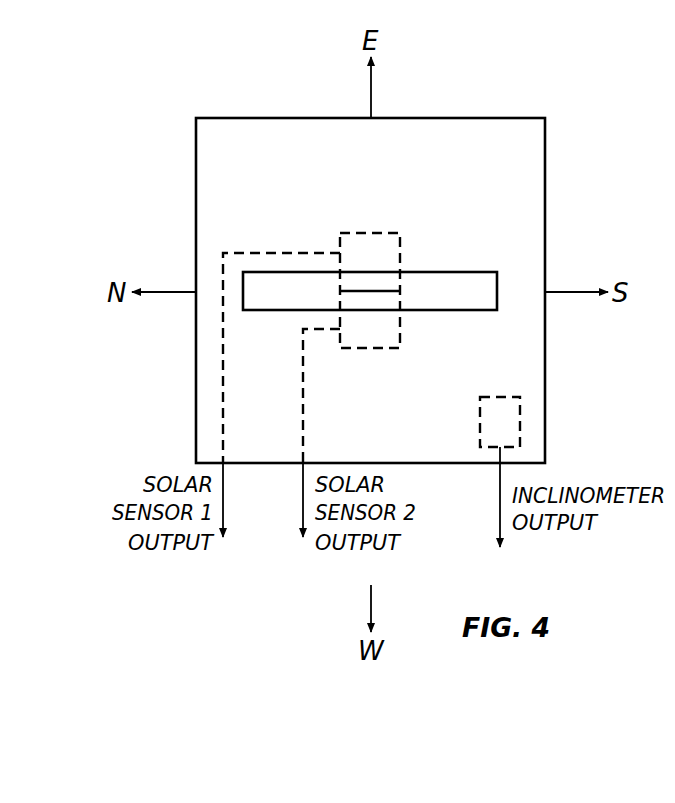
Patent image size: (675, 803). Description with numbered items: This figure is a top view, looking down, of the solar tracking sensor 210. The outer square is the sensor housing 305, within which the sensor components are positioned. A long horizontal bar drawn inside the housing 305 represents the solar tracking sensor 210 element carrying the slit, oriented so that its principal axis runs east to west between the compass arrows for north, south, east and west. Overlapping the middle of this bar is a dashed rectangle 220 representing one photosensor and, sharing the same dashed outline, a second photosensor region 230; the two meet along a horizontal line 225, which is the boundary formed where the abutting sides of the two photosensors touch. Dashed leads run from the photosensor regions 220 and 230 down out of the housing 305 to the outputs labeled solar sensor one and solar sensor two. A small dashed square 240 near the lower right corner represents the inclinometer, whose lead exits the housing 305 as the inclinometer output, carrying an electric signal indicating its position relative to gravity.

The solar tracking sensor 210 is at (200, 73).
The first solar sensor 220 is at (385, 232).
The sensor divider line 225 is at (360, 287).
The second solar sensor 230 is at (380, 350).
The inclinometer 240 is at (522, 413).
The sensor housing 305 is at (546, 195).